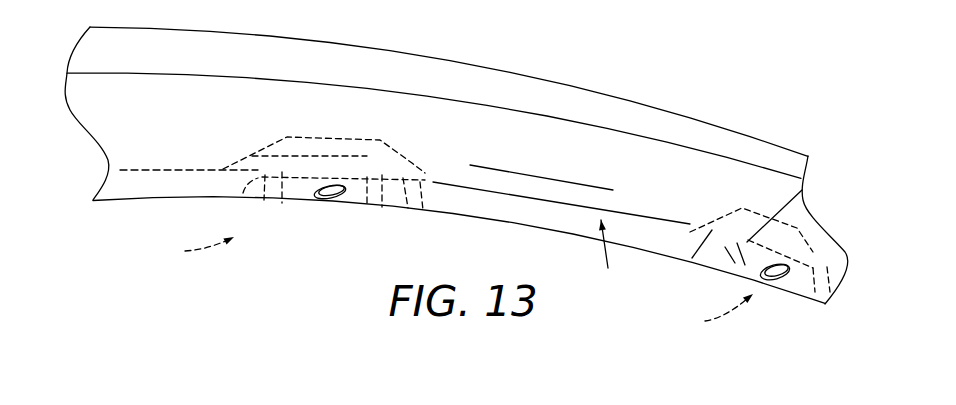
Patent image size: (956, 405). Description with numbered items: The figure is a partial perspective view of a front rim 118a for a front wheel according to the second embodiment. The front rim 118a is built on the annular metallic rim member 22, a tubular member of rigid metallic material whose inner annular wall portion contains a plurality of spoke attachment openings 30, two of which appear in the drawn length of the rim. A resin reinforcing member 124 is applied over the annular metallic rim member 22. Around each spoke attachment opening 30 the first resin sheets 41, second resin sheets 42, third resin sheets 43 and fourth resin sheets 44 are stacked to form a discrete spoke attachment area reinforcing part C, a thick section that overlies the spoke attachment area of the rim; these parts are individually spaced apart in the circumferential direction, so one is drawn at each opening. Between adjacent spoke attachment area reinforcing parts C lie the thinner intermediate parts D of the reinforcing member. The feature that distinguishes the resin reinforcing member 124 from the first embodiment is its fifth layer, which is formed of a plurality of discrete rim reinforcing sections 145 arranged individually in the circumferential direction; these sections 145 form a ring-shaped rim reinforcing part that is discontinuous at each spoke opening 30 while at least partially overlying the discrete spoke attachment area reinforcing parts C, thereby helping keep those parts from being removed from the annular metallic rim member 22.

The front rim 118a is at (686, 54).
The annular metallic rim member 22 is at (538, 78).
The resin reinforcing member 124 is at (643, 133).
The discrete rim reinforcing sections 145 is at (197, 123).
The fourth resin sheets 44 is at (290, 135).
The third resin sheets 43 is at (387, 173).
The second resin sheets 42 is at (407, 210).
The first resin sheets 41 is at (370, 150).
The spoke attachment openings 30 is at (323, 199).
The discrete spoke attachment area reinforcing parts C is at (458, 284).
The intermediate parts D is at (604, 256).